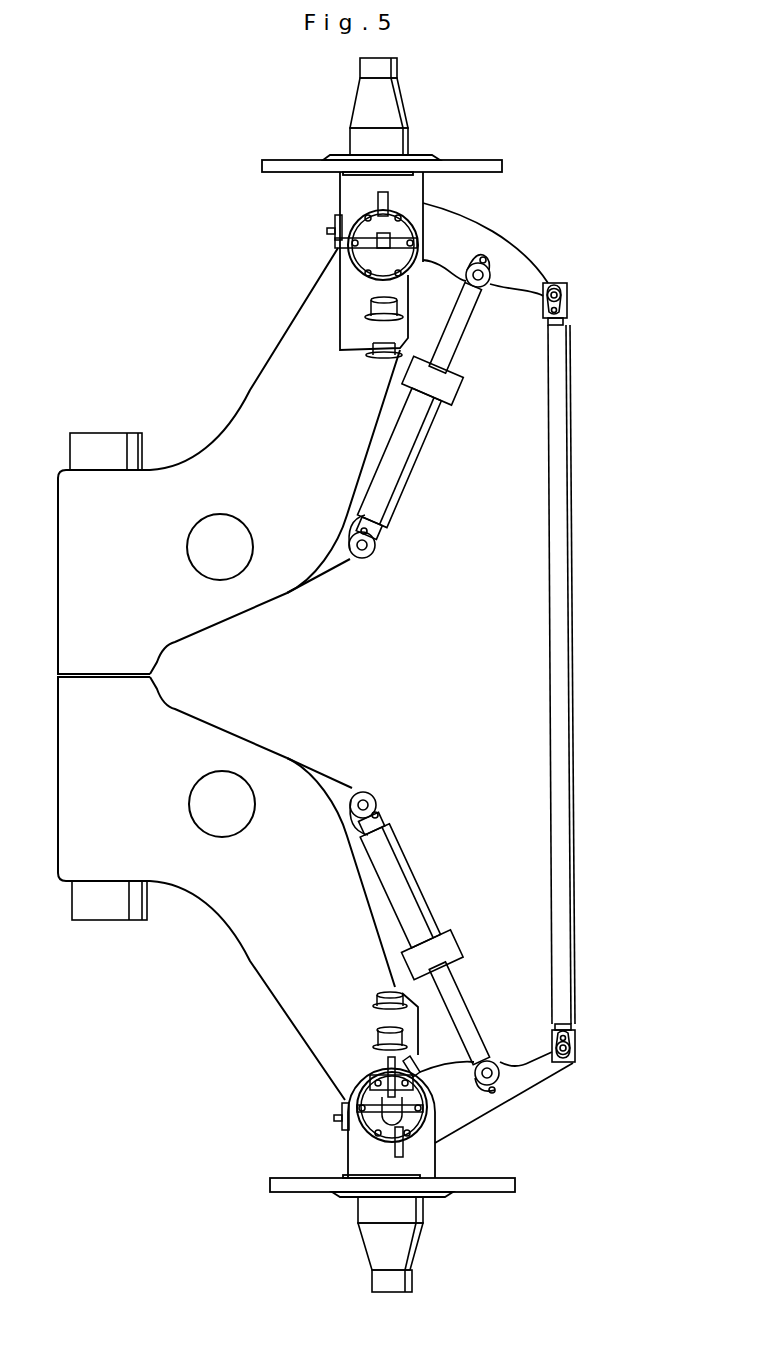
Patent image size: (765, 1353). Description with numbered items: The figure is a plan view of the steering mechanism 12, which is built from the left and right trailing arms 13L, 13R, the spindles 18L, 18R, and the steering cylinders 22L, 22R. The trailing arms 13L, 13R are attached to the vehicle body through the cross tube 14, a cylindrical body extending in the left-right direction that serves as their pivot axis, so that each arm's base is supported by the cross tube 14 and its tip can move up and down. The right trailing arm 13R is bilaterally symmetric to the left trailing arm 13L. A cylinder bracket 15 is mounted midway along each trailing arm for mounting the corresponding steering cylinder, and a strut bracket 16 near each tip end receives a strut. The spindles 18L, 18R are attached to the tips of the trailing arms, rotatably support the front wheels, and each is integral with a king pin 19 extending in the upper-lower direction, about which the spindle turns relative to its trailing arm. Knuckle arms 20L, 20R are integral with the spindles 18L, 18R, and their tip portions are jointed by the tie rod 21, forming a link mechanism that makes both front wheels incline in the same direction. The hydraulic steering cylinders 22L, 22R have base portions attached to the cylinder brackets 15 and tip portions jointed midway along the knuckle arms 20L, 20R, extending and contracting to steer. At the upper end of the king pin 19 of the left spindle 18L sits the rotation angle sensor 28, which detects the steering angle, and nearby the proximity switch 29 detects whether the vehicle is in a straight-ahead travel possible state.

The steering mechanism 12 is at (138, 319).
The right trailing arm 13R is at (227, 450).
The left trailing arm 13L is at (233, 893).
The cross tube 14 is at (107, 452).
The cylinder bracket 15 is at (336, 562).
The strut bracket 16 is at (372, 330).
The right spindle 18R is at (390, 98).
The left spindle 18L is at (402, 1247).
The king pin 19 is at (365, 256).
The right knuckle arm 20R is at (528, 270).
The left knuckle arm 20L is at (543, 1070).
The tie rod 21 is at (563, 675).
The right steering cylinder 22R is at (403, 467).
The left steering cylinder 22L is at (407, 890).
The rotation angle sensor 28 is at (395, 1113).
The proximity switch 29 is at (412, 1064).